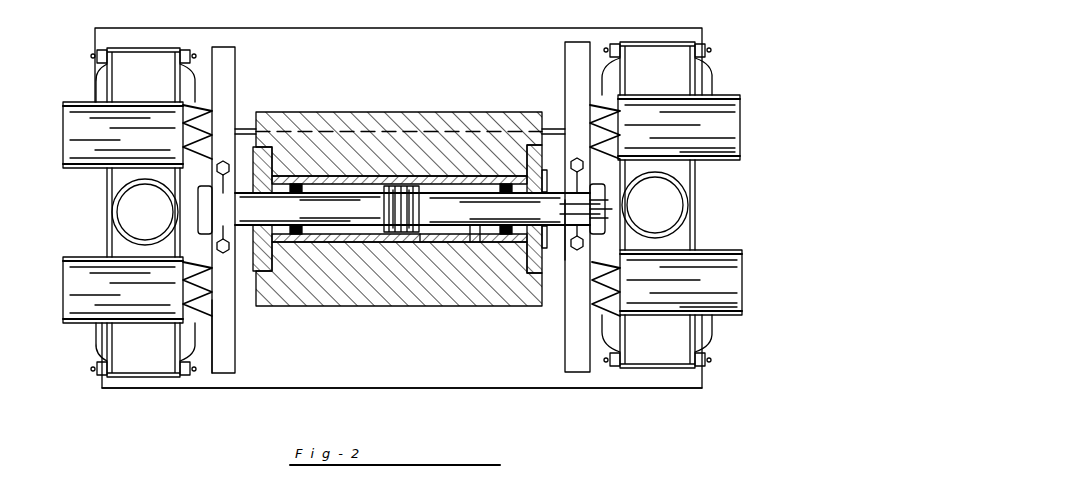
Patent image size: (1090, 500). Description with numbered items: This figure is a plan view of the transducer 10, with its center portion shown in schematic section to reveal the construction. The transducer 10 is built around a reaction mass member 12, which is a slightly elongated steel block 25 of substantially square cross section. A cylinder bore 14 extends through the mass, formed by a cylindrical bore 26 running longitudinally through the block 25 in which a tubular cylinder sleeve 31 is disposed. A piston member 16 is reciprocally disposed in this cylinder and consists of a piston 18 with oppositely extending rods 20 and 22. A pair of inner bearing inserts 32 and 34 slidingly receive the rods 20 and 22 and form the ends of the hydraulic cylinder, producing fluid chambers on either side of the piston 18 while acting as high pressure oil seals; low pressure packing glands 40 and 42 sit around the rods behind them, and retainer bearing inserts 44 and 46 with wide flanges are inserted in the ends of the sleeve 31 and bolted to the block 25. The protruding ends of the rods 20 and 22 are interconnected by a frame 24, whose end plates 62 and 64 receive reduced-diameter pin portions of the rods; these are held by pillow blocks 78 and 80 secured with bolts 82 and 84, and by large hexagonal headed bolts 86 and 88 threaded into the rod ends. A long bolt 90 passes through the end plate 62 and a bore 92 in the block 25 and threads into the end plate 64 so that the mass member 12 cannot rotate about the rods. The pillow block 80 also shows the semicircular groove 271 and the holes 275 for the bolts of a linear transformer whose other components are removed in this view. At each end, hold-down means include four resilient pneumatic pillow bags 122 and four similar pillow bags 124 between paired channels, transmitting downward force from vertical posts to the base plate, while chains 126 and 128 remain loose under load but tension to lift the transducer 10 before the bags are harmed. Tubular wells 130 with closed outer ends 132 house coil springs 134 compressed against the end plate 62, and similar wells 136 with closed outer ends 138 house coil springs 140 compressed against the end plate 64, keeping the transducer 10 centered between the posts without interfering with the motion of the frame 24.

The transducer 10 is at (190, 394).
The reaction mass member 12 is at (400, 196).
The cylinder bore 14 is at (438, 190).
The piston member 16 is at (392, 186).
The piston 18 is at (400, 234).
The piston rod 20 is at (346, 240).
The piston rod 22 is at (478, 226).
The frame 24 is at (352, 362).
The block 25 is at (338, 116).
The cylindrical bore 26 is at (306, 178).
The tubular cylinder sleeve 31 is at (422, 240).
The inner bearing insert 32 is at (312, 237).
The inner bearing insert 34 is at (472, 238).
The low pressure packing gland 40 is at (268, 238).
The low pressure packing gland 42 is at (518, 236).
The retainer bearing insert 44 is at (262, 265).
The retainer bearing insert 46 is at (540, 272).
The end plate 62 is at (233, 343).
The end plate 64 is at (574, 335).
The pillow block 78 is at (229, 182).
The pillow block 80 is at (572, 226).
The bolts 82 is at (223, 160).
The bolts 84 is at (570, 168).
The hexagonal headed bolt 86 is at (203, 200).
The hexagonal headed bolt 88 is at (598, 195).
The long bolt 90 is at (245, 127).
The bore 92 is at (372, 125).
The pneumatic pillow bags 122 is at (98, 84).
The pneumatic pillow bags 124 is at (712, 80).
The chains 126 is at (98, 54).
The chains 128 is at (610, 46).
The tubular wells 130 is at (78, 133).
The outer ends 132 is at (63, 114).
The coil spring 134 is at (192, 129).
The tubular wells 136 is at (722, 112).
The outer ends 138 is at (740, 130).
The coil spring 140 is at (615, 124).
The semicircular groove 271 is at (574, 207).
The holes 275 is at (608, 209).